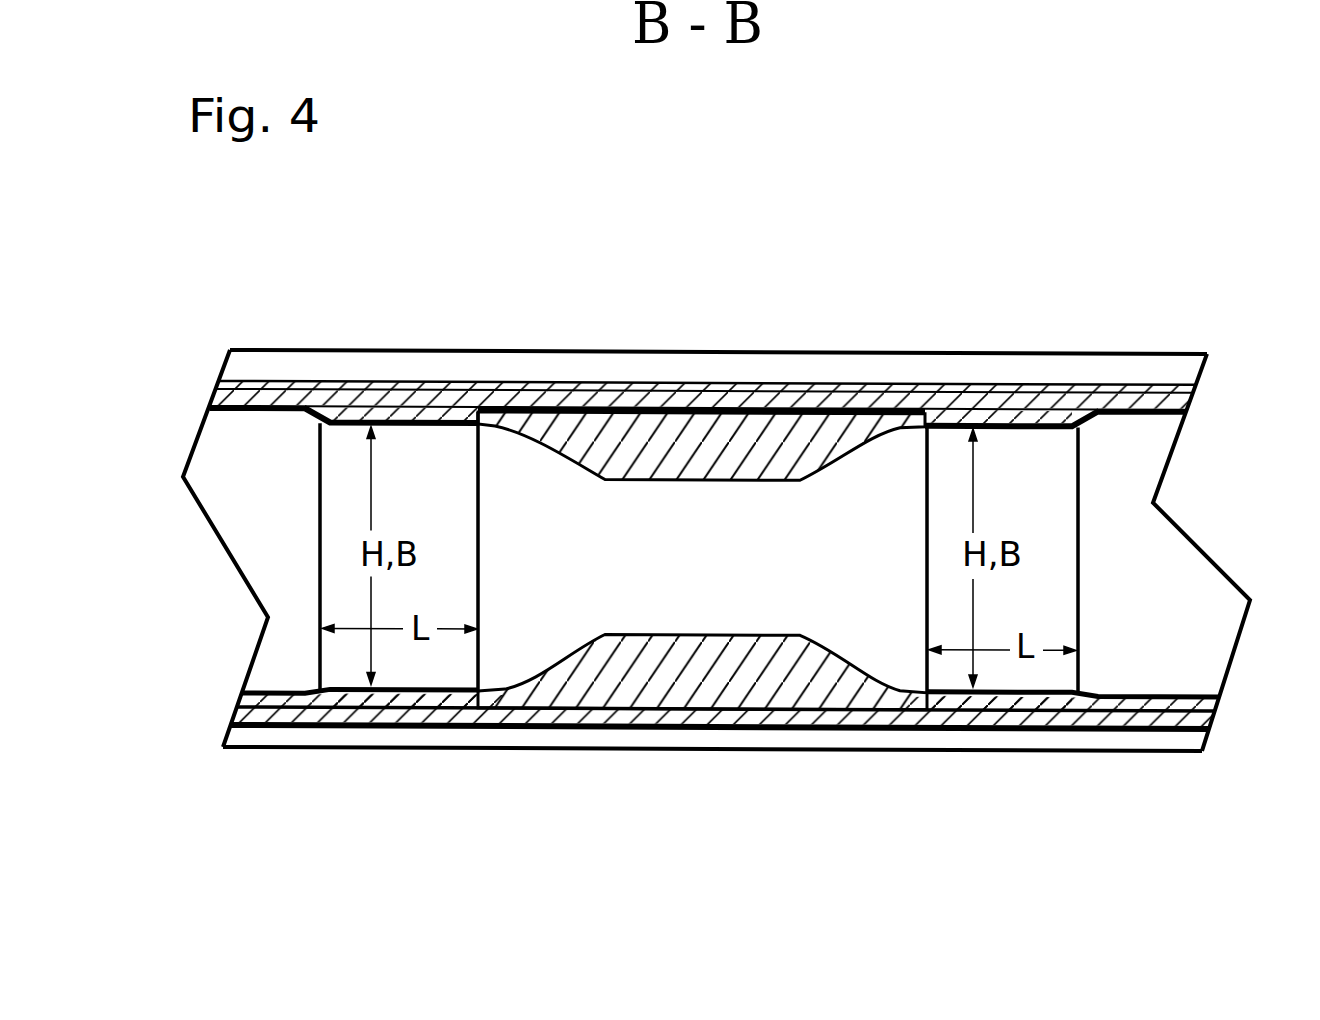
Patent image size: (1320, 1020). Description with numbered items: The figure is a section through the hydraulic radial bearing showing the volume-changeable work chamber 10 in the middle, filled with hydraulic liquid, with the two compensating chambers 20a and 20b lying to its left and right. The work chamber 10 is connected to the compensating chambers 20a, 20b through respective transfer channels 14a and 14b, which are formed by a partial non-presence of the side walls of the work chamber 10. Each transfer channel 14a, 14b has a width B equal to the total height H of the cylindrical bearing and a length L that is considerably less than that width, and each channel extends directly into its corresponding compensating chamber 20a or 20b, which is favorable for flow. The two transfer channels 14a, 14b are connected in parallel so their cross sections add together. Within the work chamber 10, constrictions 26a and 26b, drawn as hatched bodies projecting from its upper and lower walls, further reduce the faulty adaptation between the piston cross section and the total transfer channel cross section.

The work chamber 10 is at (716, 571).
The transfer channel 14a is at (423, 456).
The transfer channel 14b is at (1025, 458).
The compensating chamber 20a is at (262, 534).
The compensating chamber 20b is at (1133, 565).
The constriction 26a is at (693, 438).
The constriction 26b is at (728, 672).